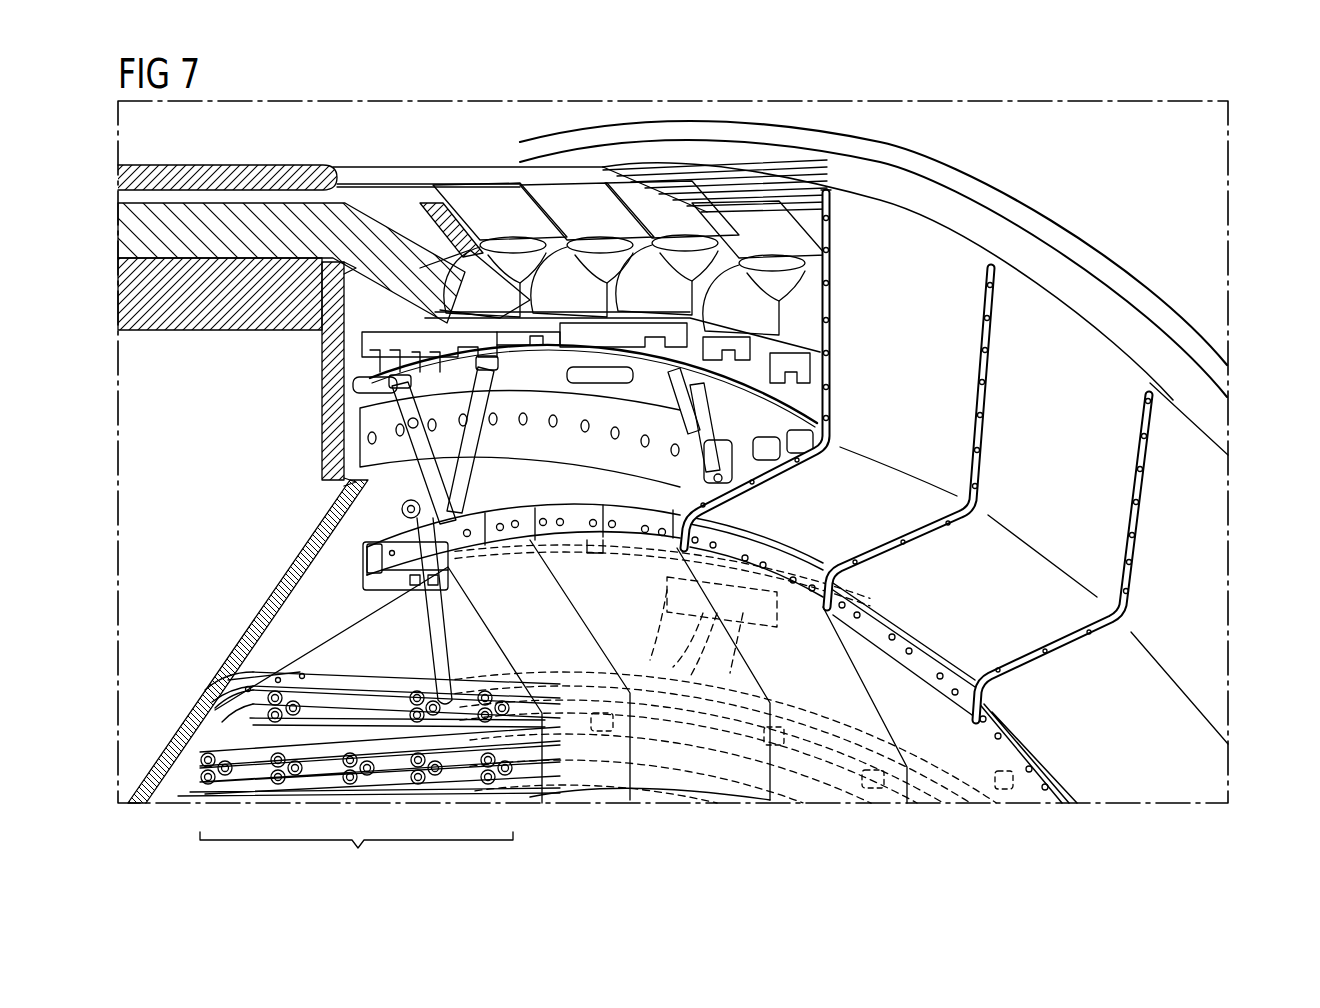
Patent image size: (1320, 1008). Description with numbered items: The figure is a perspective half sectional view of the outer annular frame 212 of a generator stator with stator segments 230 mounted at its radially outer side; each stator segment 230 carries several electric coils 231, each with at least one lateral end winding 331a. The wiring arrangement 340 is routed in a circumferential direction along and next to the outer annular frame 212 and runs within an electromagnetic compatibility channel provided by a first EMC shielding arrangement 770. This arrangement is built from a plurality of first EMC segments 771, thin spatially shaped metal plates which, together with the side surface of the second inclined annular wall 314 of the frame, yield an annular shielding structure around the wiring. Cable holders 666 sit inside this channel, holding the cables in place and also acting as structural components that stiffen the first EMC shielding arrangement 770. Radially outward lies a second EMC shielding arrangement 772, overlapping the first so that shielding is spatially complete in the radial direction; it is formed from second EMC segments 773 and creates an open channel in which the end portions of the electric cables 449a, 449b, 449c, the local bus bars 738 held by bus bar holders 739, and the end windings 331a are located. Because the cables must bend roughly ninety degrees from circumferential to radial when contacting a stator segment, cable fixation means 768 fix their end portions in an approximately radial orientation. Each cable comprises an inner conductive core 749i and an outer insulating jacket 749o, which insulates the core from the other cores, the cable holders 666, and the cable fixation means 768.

The outer annular frame 212 is at (154, 346).
The stator segment 230 is at (261, 325).
The electric coil 231 is at (214, 210).
The end winding 331a is at (560, 203).
The bus bar holder 739 is at (603, 323).
The local bus bar 738 is at (432, 362).
The electric cable 449a is at (403, 513).
The electric cable 449b is at (340, 484).
The electric cable 449c is at (466, 470).
The second inclined annular wall 314 is at (254, 610).
The cable fixation means 768 is at (394, 592).
The outer insulating structure 749o is at (222, 755).
The inner conductive core 749i is at (279, 785).
The cable holder 666 is at (473, 723).
The wiring arrangement 340 is at (356, 856).
The first EMC segment 771 is at (558, 649).
The second EMC segment 773 is at (938, 343).
The first EMC shielding arrangement 770 is at (953, 814).
The second EMC shielding arrangement 772 is at (1215, 582).